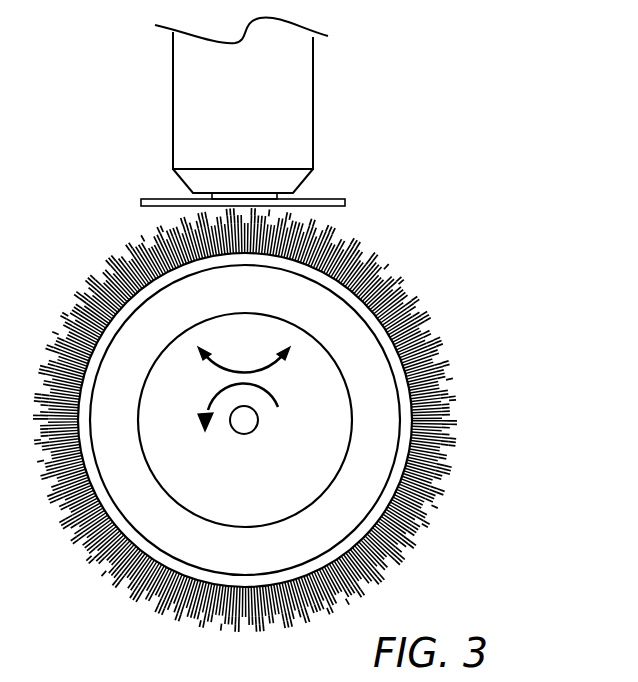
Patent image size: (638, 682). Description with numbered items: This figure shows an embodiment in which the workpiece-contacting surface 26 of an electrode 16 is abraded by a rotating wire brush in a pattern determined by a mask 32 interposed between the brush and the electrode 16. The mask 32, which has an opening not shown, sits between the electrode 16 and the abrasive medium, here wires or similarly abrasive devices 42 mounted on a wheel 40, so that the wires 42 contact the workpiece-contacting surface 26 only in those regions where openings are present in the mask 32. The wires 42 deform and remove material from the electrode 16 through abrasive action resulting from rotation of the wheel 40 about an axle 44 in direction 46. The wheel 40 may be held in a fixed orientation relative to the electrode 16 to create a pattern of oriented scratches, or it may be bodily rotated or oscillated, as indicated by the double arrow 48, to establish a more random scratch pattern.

The electrode 16 is at (172, 90).
The workpiece-contacting surface 26 is at (298, 203).
The mask 32 is at (330, 207).
The wheel 40 is at (311, 420).
The wires 42 is at (430, 508).
The axle 44 is at (257, 424).
The direction of rotation 46 is at (205, 414).
The double arrow 48 is at (243, 372).